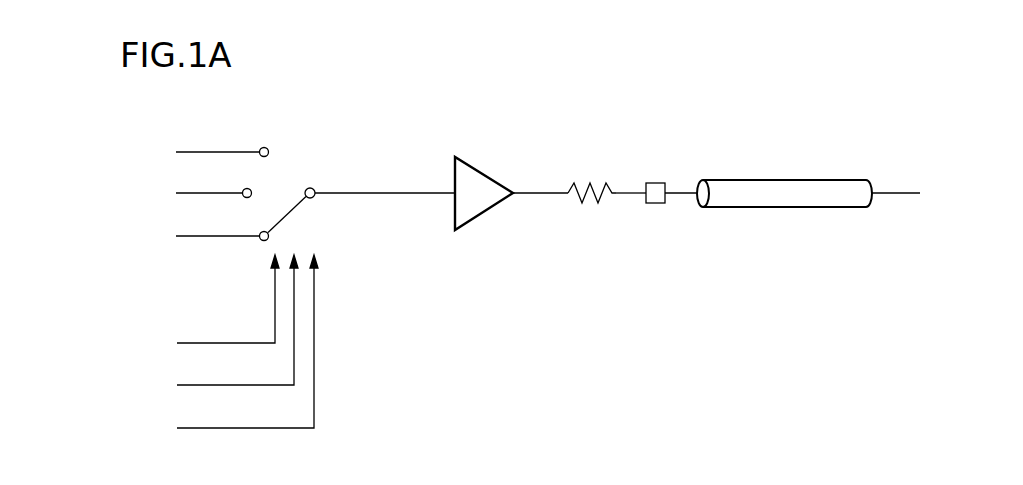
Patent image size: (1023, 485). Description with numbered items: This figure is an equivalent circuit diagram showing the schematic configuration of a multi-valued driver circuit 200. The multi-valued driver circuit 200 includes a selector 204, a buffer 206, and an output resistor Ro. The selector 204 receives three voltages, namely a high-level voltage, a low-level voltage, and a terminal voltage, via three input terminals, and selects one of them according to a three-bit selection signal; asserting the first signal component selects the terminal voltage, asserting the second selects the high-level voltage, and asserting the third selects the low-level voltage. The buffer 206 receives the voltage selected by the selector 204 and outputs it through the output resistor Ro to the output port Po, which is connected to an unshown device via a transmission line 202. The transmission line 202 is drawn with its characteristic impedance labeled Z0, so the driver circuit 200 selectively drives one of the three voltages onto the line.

The multi-valued driver circuit 200 is at (467, 469).
The transmission line 202 is at (808, 159).
The selector 204 is at (298, 148).
The buffer 206 is at (484, 165).
The output resistor Ro is at (598, 178).
The output port Po is at (655, 203).
The characteristic impedance Z0 is at (847, 156).